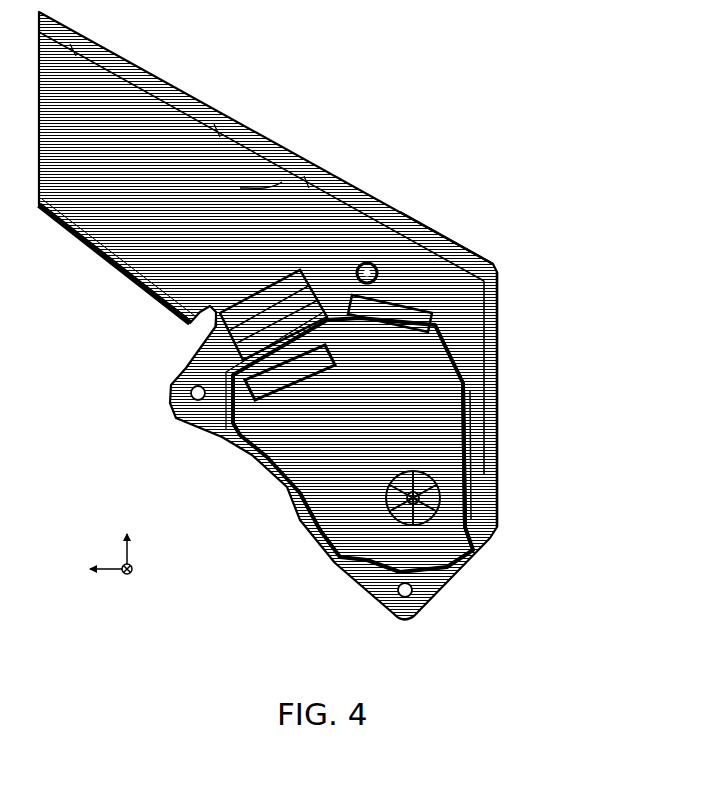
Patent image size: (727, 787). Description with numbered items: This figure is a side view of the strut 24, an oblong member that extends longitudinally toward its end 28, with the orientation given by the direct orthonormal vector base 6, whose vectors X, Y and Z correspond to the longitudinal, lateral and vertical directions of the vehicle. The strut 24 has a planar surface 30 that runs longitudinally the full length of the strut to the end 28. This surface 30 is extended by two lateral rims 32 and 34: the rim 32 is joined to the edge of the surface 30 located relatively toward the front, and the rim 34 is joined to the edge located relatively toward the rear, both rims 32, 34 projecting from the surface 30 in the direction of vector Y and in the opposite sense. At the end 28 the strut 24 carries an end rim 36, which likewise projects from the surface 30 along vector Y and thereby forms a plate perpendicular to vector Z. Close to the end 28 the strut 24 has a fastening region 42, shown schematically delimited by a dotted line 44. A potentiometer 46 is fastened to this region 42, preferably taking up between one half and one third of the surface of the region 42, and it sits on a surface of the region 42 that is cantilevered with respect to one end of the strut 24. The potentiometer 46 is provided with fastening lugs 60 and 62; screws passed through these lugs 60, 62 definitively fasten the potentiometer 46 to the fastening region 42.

The direct orthonormal vector base 6 is at (101, 600).
The strut 24 is at (552, 379).
The end 28 is at (500, 462).
The planar surface 30 is at (163, 170).
The lateral rim 32 is at (145, 91).
The lateral rim 34 is at (60, 228).
The end rim 36 is at (499, 334).
The fastening region 42 is at (452, 262).
The dotted line 44 is at (282, 182).
The potentiometer 46 is at (290, 490).
The fastening lug 60 is at (185, 420).
The fastening lug 62 is at (404, 622).